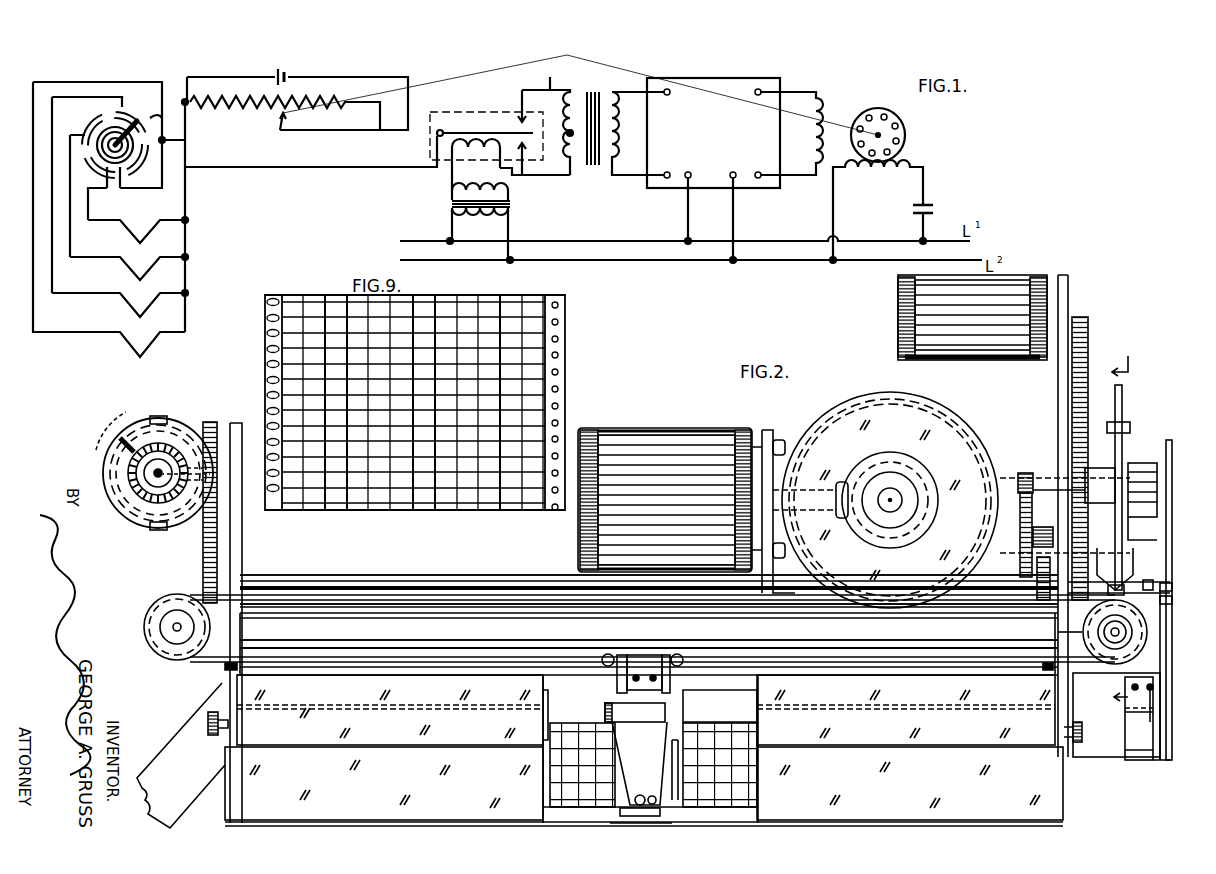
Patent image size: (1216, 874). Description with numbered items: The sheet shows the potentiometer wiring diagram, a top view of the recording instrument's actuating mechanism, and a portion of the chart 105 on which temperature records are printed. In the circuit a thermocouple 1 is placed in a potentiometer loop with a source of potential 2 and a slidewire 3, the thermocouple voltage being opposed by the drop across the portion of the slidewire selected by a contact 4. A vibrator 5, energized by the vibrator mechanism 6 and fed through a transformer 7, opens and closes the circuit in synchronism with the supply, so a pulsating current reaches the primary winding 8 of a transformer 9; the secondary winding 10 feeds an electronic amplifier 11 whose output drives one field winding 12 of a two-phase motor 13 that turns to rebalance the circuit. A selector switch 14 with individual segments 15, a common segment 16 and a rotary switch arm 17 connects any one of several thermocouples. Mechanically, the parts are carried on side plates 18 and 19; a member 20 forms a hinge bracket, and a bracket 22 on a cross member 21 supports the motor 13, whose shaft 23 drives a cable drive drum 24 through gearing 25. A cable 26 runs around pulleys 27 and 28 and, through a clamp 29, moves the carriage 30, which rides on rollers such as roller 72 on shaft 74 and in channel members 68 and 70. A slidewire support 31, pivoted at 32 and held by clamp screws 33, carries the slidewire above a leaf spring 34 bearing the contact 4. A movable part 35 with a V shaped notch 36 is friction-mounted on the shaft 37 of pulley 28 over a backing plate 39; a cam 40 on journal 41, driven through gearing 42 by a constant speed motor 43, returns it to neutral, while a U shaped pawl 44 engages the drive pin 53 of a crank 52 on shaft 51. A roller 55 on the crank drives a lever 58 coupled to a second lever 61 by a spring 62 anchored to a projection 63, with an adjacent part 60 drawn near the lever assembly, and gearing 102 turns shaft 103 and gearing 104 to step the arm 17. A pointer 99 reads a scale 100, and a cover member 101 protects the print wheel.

In FIG. 1, the thermocouple 1 is at (125, 300).
In FIG. 1, the source of potential 2 is at (287, 73).
In FIG. 1, the slidewire 3 is at (288, 98).
In FIG. 2, the slidewire 3 is at (646, 710).
In FIG. 1, the contact 4 is at (276, 116).
In FIG. 2, the contact 4 is at (666, 718).
In FIG. 1, the vibrator 5 is at (496, 130).
In FIG. 2, the vibrator 5 is at (1111, 536).
In FIG. 1, the vibrator mechanism 6 is at (446, 150).
In FIG. 2, the vibrator mechanism 6 is at (688, 634).
In FIG. 1, the transformer 7 is at (450, 214).
In FIG. 2, the transformer 7 is at (662, 634).
In FIG. 1, the primary winding 8 is at (584, 167).
In FIG. 1, the transformer 9 is at (598, 86).
In FIG. 1, the transformer secondary winding 10 is at (612, 165).
In FIG. 1, the electronic amplifier 11 is at (674, 186).
In FIG. 1, the field winding 12 is at (824, 100).
In FIG. 1, the two phase motor 13 is at (905, 128).
In FIG. 2, the two phase motor 13 is at (652, 428).
In FIG. 1, the selector switch 14 is at (128, 73).
In FIG. 2, the selector switch 14 is at (110, 434).
In FIG. 1, the segment 15 is at (125, 112).
In FIG. 2, the segment 15 is at (174, 430).
In FIG. 1, the common segment 16 is at (92, 118).
In FIG. 2, the common segment 16 is at (160, 427).
In FIG. 1, the rotary switch arm 17 is at (156, 110).
In FIG. 2, the rotary switch arm 17 is at (125, 424).
In FIG. 2, the side plate 18 is at (242, 550).
In FIG. 2, the side plate 19 is at (1058, 398).
In FIG. 2, the member 20 is at (176, 744).
In FIG. 2, the cross member 21 is at (485, 597).
In FIG. 2, the bracket 22 is at (767, 430).
In FIG. 2, the shaft 23 is at (782, 444).
In FIG. 2, the cable drive drum 24 is at (834, 412).
In FIG. 2, the gearing 25 is at (842, 481).
In FIG. 2, the cable 26 is at (358, 590).
In FIG. 2, the pulley 27 is at (146, 630).
In FIG. 2, the pulley 28 is at (1146, 633).
In FIG. 2, the clamp 29 is at (634, 658).
In FIG. 2, the carriage 30 is at (605, 695).
In FIG. 2, the slidewire support 31 is at (426, 678).
In FIG. 2, the pivot 32 is at (225, 666).
In FIG. 2, the clamp screws 33 is at (209, 736).
In FIG. 2, the leaf spring 34 is at (630, 724).
In FIG. 2, the movable part 35 is at (1179, 591).
In FIG. 2, the V shaped notch 36 is at (1124, 548).
In FIG. 2, the shaft 37 is at (1126, 634).
In FIG. 2, the backing plate 39 is at (1150, 584).
In FIG. 2, the cam 40 is at (1122, 400).
In FIG. 2, the journal 41 is at (1098, 468).
In FIG. 2, the gearing 42 is at (1121, 359).
In FIG. 2, the constant speed motor 43 is at (966, 361).
In FIG. 2, the U shaped pawl 44 is at (1128, 436).
In FIG. 2, the shaft 51 is at (1028, 472).
In FIG. 2, the crank 52 is at (1156, 510).
In FIG. 2, the drive pin 53 is at (1130, 464).
In FIG. 2, the roller 55 is at (1168, 604).
In FIG. 2, the lever 58 is at (1172, 472).
In FIG. 2, the bracket 60 is at (1164, 760).
In FIG. 2, the second lever 61 is at (1104, 762).
In FIG. 2, the spring 62 is at (1144, 760).
In FIG. 2, the projection 63 is at (1152, 672).
In FIG. 2, the channel member 68 is at (292, 640).
In FIG. 2, the channel member 70 is at (748, 822).
In FIG. 2, the roller 72 is at (604, 656).
In FIG. 2, the shaft 74 is at (720, 706).
In FIG. 2, the pointer 99 is at (615, 828).
In FIG. 2, the scale 100 is at (520, 820).
In FIG. 2, the cover member 101 is at (418, 808).
In FIG. 2, the gearing 102 is at (1018, 544).
In FIG. 2, the shaft 103 is at (531, 574).
In FIG. 2, the gearing 104 is at (150, 500).
In FIG. 9, the chart 105 is at (508, 303).
In FIG. 2, the chart 105 is at (545, 786).